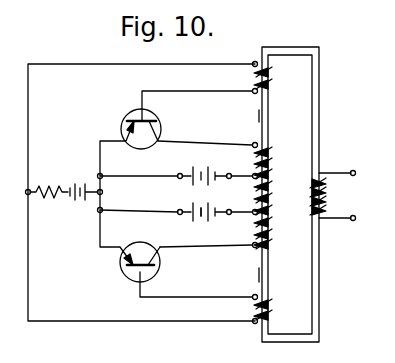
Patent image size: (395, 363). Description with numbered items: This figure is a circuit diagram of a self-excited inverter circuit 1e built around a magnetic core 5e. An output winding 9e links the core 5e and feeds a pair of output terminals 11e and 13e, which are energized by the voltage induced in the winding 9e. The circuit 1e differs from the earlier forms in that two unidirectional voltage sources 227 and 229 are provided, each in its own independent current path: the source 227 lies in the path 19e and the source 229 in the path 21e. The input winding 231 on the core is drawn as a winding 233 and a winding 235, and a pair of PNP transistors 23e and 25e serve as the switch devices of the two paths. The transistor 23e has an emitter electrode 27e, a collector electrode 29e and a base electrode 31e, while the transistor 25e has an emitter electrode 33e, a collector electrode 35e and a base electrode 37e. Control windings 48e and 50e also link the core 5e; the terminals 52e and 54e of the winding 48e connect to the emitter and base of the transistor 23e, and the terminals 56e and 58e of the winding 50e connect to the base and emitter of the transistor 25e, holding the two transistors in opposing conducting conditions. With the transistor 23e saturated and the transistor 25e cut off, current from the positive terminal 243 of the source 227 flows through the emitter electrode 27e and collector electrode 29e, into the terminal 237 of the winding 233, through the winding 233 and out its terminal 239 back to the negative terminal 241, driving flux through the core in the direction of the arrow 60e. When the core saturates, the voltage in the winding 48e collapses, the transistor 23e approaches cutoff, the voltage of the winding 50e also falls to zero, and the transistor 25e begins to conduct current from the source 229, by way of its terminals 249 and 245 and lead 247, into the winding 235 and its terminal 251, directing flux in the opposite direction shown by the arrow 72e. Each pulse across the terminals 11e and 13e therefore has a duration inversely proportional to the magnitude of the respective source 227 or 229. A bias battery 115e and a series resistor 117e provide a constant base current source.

The circuit 1e is at (124, 344).
The core 5e is at (319, 257).
The output winding 9e is at (324, 196).
The output terminal 11e is at (353, 170).
The output terminal 13e is at (354, 215).
The current path 19e is at (133, 168).
The current path 21e is at (131, 230).
The transistor 23e is at (193, 119).
The transistor 25e is at (190, 286).
The emitter electrode 27e is at (123, 136).
The collector electrode 29e is at (162, 133).
The base electrode 31e is at (138, 111).
The emitter electrode 33e is at (122, 250).
The collector electrode 35e is at (158, 256).
The base electrode 37e is at (131, 278).
The control winding 48e is at (266, 88).
The control winding 50e is at (266, 306).
The winding terminal 52e is at (252, 64).
The winding terminal 54e is at (252, 91).
The winding terminal 56e is at (252, 297).
The winding terminal 58e is at (252, 321).
The arrow 60e is at (266, 118).
The arrow 72e is at (266, 278).
The bias battery 115e is at (94, 189).
The series resistor 117e is at (47, 183).
The unidirectional voltage source 227 is at (201, 165).
The unidirectional voltage source 229 is at (178, 214).
The winding section 231 is at (293, 200).
The winding 233 is at (266, 153).
The winding 235 is at (266, 244).
The winding terminal 237 is at (252, 144).
The winding terminal 239 is at (252, 179).
The negative terminal 241 is at (230, 173).
The positive terminal 243 is at (178, 178).
The battery terminal 245 is at (235, 218).
The battery lead 247 is at (209, 220).
The battery terminal 249 is at (178, 214).
The winding terminal 251 is at (252, 246).